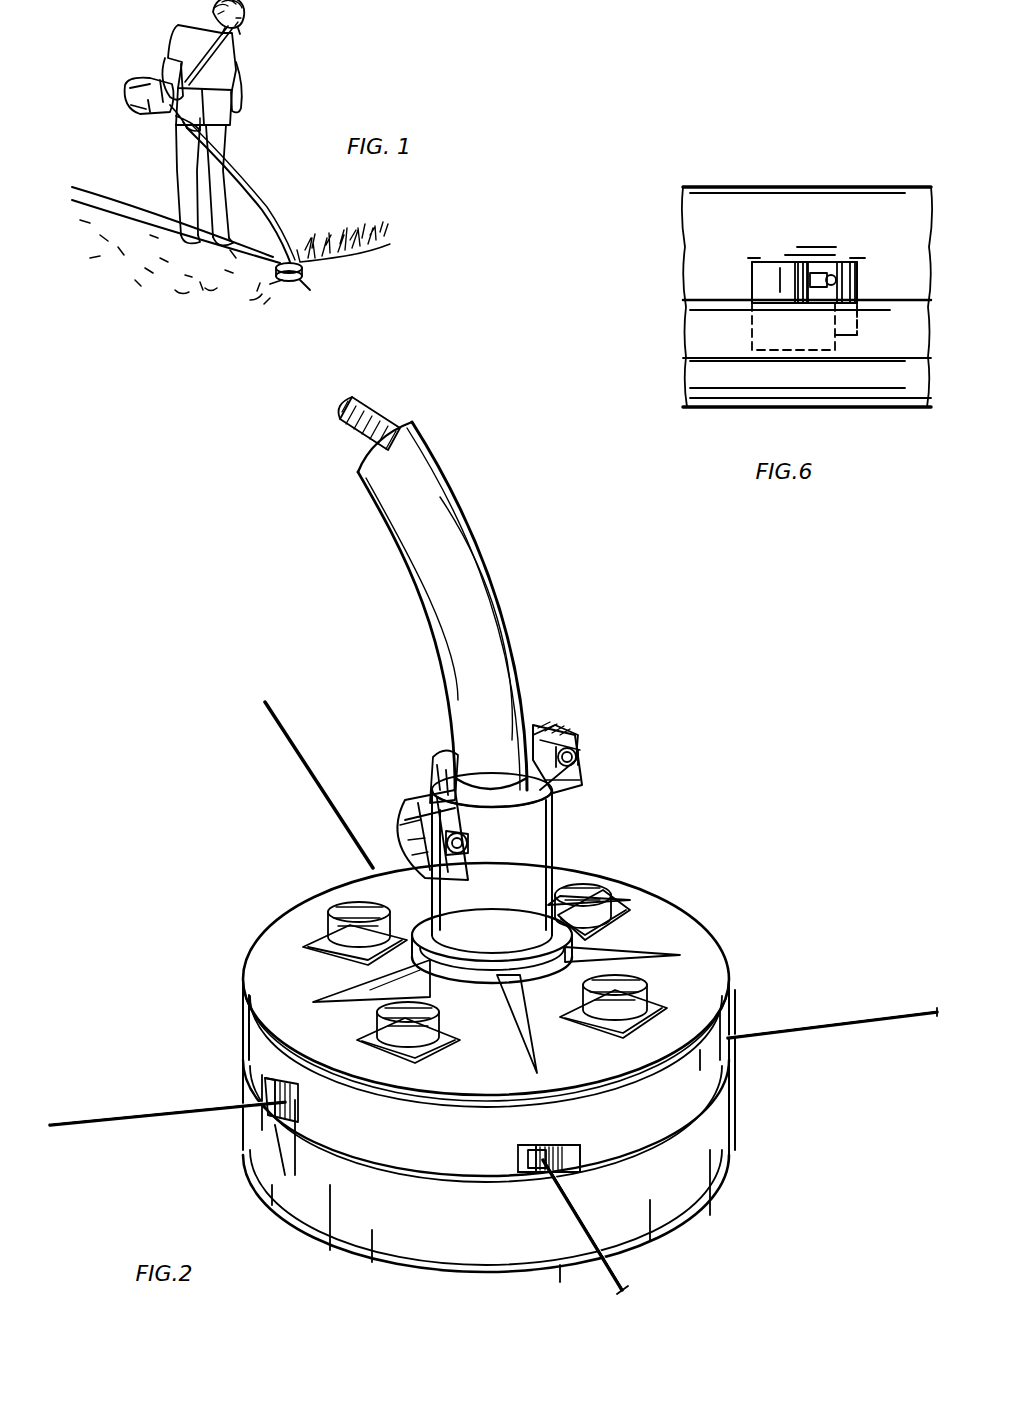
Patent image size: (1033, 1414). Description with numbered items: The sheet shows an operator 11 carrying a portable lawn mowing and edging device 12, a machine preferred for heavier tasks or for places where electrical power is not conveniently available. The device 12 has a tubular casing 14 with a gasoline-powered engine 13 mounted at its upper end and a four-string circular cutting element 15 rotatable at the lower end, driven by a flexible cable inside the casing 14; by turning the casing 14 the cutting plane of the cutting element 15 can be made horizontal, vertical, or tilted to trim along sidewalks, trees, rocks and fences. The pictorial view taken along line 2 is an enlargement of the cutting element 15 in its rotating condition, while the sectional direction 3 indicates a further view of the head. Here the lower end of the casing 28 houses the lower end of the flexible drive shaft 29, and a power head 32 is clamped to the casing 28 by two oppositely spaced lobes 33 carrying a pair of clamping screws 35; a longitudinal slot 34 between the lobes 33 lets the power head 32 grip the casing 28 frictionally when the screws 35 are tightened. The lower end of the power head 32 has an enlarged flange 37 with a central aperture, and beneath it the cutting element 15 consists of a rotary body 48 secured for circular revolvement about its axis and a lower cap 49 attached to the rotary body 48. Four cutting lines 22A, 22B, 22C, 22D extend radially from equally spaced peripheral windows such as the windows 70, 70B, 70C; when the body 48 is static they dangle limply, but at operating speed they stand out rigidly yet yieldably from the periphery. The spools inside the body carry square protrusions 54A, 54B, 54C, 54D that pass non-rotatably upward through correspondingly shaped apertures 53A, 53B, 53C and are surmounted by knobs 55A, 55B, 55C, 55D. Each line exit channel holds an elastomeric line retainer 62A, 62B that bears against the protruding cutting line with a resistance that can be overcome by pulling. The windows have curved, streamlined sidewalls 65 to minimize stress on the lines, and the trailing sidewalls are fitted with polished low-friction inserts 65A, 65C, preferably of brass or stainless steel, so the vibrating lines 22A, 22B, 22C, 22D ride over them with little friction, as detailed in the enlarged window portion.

In FIG. 1, the section line 2— 2 is at (240, 292).
In FIG. 2, the section line 3- 3 is at (494, 396).
In FIG. 1, the operator 11 is at (255, 52).
In FIG. 1, the portable lawn mowing and edging device 12 is at (248, 154).
In FIG. 1, the gasoline-powered engine 13 is at (150, 118).
In FIG. 1, the tubular member or casing 14 is at (258, 192).
In FIG. 1, the cutting element 15 is at (275, 258).
In FIG. 2, the cutting element 15 is at (745, 862).
In FIG. 6, the cutting line 22A is at (837, 283).
In FIG. 2, the cutting line 22A is at (878, 1016).
In FIG. 2, the cutting line 22B is at (628, 1284).
In FIG. 2, the cutting line 22C is at (110, 1112).
In FIG. 2, the cutting line 22D is at (290, 745).
In FIG. 2, the casing 28 is at (462, 488).
In FIG. 2, the flexible cable or drive shaft 29 is at (345, 432).
In FIG. 2, the power head 32 is at (548, 834).
In FIG. 2, the lobes 33 is at (568, 728).
In FIG. 2, the longitudinal slot 34 is at (435, 758).
In FIG. 2, the clamping screws 35 is at (578, 757).
In FIG. 2, the enlarged flange 37 is at (520, 943).
In FIG. 6, the rotary body 48 is at (706, 190).
In FIG. 2, the rotary body 48 is at (707, 942).
In FIG. 6, the lower cap 49 is at (708, 394).
In FIG. 2, the lower cap 49 is at (733, 1130).
In FIG. 2, the aperture 53A is at (628, 912).
In FIG. 2, the aperture 53B is at (667, 1010).
In FIG. 2, the aperture 53C is at (435, 1055).
In FIG. 2, the protrusion 54A is at (612, 892).
In FIG. 2, the protrusion 54B is at (650, 990).
In FIG. 2, the protrusion 54C is at (440, 1030).
In FIG. 2, the protrusion 54D is at (322, 940).
In FIG. 2, the knob 55A is at (598, 882).
In FIG. 2, the knob 55B is at (665, 958).
In FIG. 2, the knob 55C is at (400, 1040).
In FIG. 2, the knob 55D is at (353, 880).
In FIG. 6, the elastomeric line retainer 62A is at (814, 272).
In FIG. 2, the elastomeric line retainer 62B is at (535, 1148).
In FIG. 6, the sidewalls 65 is at (765, 268).
In FIG. 2, the sidewalls 65 is at (268, 1045).
In FIG. 6, the insert 65A is at (853, 298).
In FIG. 2, the insert 65C is at (280, 1130).
In FIG. 6, the window 70 is at (834, 240).
In FIG. 2, the window 70B is at (555, 1146).
In FIG. 2, the window 70C is at (290, 1088).